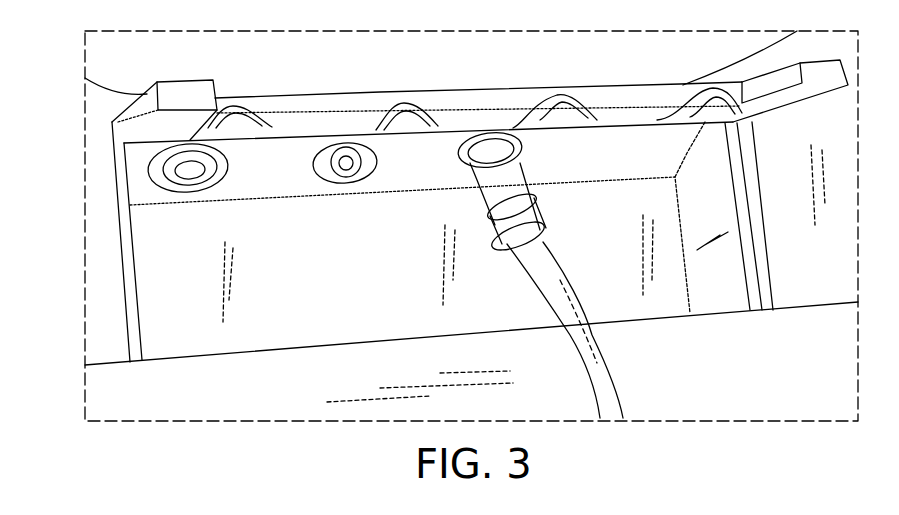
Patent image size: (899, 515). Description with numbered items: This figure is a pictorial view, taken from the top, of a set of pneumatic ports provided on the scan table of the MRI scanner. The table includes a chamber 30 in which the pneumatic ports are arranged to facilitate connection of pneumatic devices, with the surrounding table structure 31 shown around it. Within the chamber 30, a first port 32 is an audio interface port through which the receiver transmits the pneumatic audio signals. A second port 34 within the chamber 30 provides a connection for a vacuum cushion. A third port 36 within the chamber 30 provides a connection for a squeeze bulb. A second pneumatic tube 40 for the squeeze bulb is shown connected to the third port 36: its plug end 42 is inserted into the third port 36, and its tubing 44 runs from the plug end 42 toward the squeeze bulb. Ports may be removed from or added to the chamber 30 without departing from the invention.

The chamber 30 is at (605, 214).
The vehicle body panel 31 is at (120, 117).
The first port 32 is at (163, 182).
The second port 34 is at (343, 183).
The third port 36 is at (523, 152).
The second pneumatic tube 40 is at (553, 264).
The plug end 42 is at (478, 196).
The tubing 44 is at (604, 356).